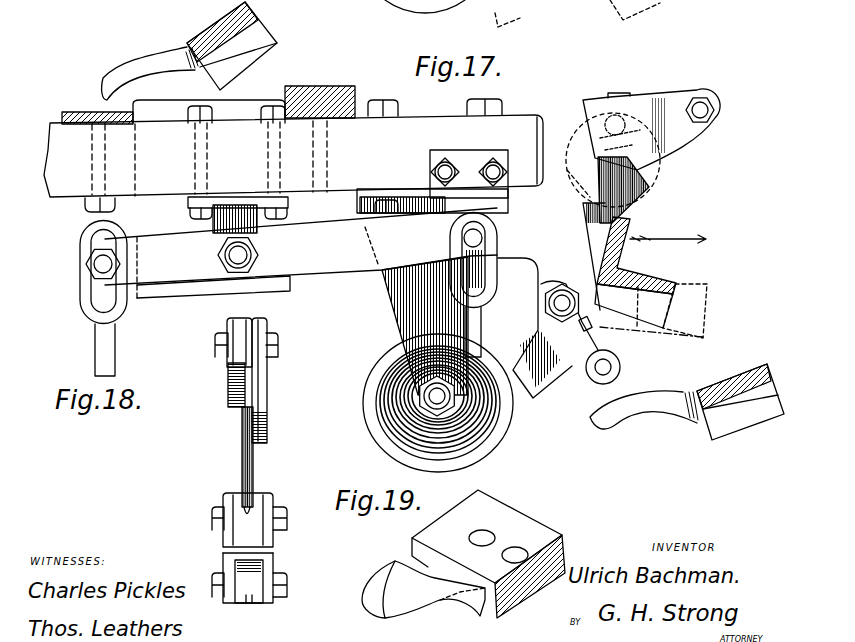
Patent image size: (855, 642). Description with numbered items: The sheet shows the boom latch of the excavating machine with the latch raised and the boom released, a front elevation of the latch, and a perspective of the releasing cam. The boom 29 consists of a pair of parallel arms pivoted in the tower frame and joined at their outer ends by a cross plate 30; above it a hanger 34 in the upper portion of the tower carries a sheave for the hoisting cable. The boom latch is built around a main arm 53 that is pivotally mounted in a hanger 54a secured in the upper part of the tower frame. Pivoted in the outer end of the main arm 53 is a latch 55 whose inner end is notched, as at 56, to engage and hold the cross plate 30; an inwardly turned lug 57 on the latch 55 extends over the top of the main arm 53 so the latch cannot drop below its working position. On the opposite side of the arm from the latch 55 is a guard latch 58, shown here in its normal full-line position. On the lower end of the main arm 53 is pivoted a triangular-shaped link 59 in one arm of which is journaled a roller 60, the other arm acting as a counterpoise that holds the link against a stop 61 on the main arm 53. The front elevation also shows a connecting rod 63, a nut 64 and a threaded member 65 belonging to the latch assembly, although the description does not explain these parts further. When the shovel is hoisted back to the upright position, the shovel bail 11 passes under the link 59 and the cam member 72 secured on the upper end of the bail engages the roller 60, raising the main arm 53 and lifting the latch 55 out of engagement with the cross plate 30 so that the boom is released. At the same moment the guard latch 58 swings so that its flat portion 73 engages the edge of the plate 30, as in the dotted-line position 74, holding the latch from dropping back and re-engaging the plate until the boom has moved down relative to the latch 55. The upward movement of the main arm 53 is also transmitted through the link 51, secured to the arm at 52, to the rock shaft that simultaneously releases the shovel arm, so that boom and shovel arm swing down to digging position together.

In FIG. 17, the shovel bail 11 is at (706, 373).
In FIG. 19, the shovel bail 11 is at (488, 554).
In FIG. 17, the cam member 72 is at (200, 7).
In FIG. 19, the cam member 72 is at (423, 589).
In FIG. 17, the boom 29 is at (651, 311).
In FIG. 17, the cross piece or plate 30 is at (668, 255).
In FIG. 17, the hanger 34 is at (438, 364).
In FIG. 17, the link 51 is at (483, 323).
In FIG. 17, the securing point of link to main arm 52 is at (459, 260).
In FIG. 17, the main arm 53 is at (301, 253).
In FIG. 17, the hanger 54a is at (200, 223).
In FIG. 17, the latch 55 is at (651, 129).
In FIG. 17, the notch 56 is at (631, 185).
In FIG. 17, the inwardly turned lug 57 is at (618, 89).
In FIG. 18, the inwardly turned lug 57 is at (262, 304).
In FIG. 17, the guard latch 58 is at (578, 256).
In FIG. 18, the guard latch 58 is at (269, 404).
In FIG. 17, the triangular-shaped link 59 is at (548, 328).
In FIG. 18, the triangular-shaped link 59 is at (249, 523).
In FIG. 17, the roller 60 is at (621, 363).
In FIG. 18, the roller 60 is at (248, 589).
In FIG. 17, the stop 61 is at (592, 326).
In FIG. 18, the stop 61 is at (226, 549).
In FIG. 18, the rod 63 is at (234, 460).
In FIG. 17, the nut 64 is at (220, 255).
In FIG. 18, the threaded rod 65 is at (225, 385).
In FIG. 17, the flat portion 73 is at (630, 255).
In FIG. 17, the dotted line position 74 is at (667, 193).